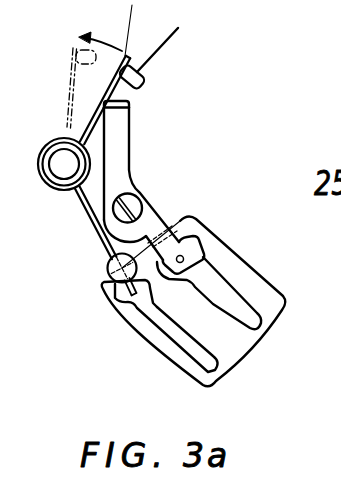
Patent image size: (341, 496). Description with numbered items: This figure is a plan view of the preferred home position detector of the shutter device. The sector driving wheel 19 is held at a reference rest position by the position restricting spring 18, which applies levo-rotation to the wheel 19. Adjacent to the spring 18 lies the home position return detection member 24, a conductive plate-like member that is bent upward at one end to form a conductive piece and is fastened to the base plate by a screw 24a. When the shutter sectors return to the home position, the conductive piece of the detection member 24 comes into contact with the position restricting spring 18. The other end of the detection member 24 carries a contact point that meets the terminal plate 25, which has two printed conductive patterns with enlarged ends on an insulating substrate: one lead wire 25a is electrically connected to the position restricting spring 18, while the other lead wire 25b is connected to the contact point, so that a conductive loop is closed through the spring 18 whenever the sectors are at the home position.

The position restricting spring 18 is at (88, 220).
The sector driving wheel 19 is at (161, 40).
The home position return detection member 24 is at (128, 145).
The screw 24a is at (140, 205).
The terminal plate 25 is at (218, 252).
The lead wire 25a is at (172, 338).
The lead wire 25b is at (231, 300).